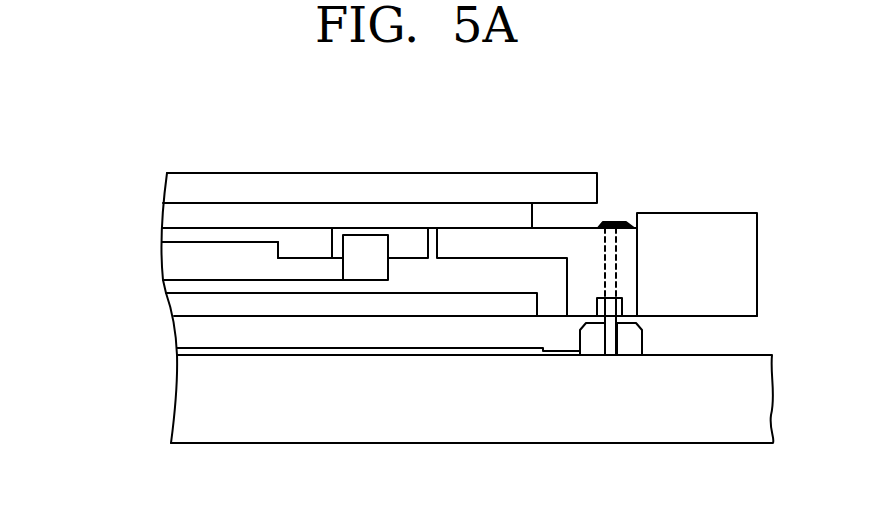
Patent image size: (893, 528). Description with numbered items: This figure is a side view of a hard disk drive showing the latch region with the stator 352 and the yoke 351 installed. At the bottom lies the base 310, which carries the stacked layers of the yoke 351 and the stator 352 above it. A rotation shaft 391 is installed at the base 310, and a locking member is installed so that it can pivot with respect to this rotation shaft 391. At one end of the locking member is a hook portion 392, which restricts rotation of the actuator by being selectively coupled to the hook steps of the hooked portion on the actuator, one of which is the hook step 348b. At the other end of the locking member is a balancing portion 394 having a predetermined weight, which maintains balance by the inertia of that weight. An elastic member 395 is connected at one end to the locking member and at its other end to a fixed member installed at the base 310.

The base 310 is at (727, 427).
The yoke 351 is at (170, 185).
The stator 352 is at (177, 217).
The hook portion 392 is at (301, 243).
The hook step 348b is at (372, 243).
The rotation shaft 391 is at (613, 222).
The balancing portion 394 is at (712, 223).
The elastic member 395 is at (612, 350).